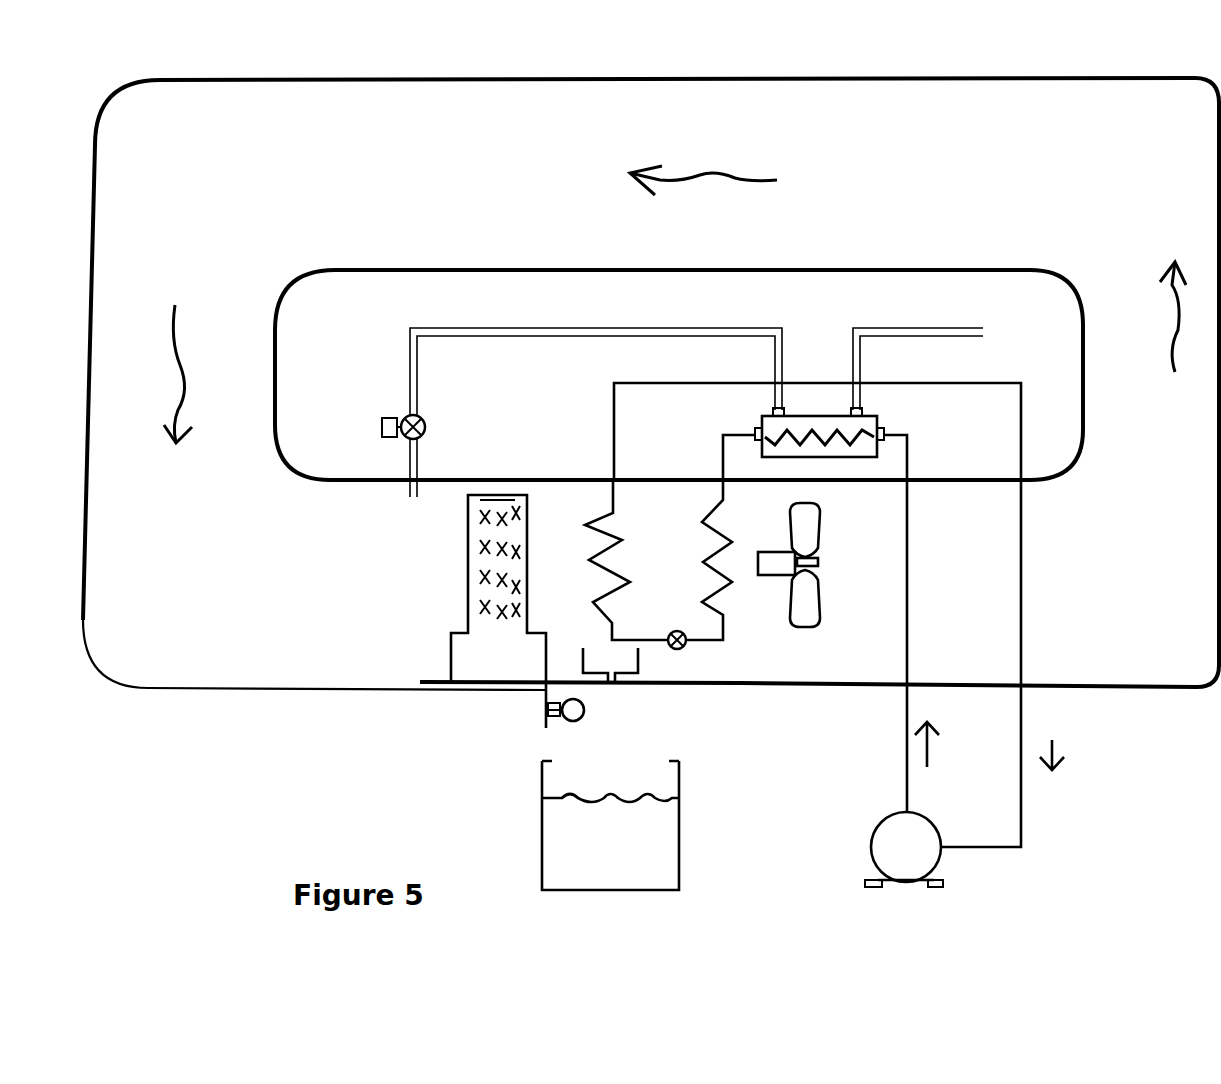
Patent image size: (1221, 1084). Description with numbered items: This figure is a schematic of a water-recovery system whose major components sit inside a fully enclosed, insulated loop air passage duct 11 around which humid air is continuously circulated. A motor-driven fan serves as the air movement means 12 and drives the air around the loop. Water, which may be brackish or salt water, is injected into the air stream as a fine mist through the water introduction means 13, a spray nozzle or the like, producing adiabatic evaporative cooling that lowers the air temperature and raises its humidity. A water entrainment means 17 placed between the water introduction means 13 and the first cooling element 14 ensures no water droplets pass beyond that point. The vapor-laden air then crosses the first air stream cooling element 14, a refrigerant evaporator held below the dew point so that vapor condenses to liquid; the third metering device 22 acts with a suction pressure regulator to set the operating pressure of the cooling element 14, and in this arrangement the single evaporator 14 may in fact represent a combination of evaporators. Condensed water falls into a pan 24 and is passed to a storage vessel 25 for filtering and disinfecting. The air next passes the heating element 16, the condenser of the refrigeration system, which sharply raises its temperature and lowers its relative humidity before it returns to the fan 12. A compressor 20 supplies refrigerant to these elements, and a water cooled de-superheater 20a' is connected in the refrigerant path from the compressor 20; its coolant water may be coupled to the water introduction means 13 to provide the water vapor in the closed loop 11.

The closed loop air passage duct 11 is at (148, 687).
The air movement means 12 is at (822, 598).
The water introduction means 13 is at (425, 423).
The first air stream cooling element 14 is at (587, 560).
The air stream heating element 16 is at (700, 567).
The water entrainment means 17 is at (457, 570).
The compressor 20 is at (880, 828).
The water cooled de-superheater 20a' is at (817, 615).
The third metering device 22 is at (683, 650).
The pan 24 is at (638, 680).
The storage vessel 25 is at (542, 818).